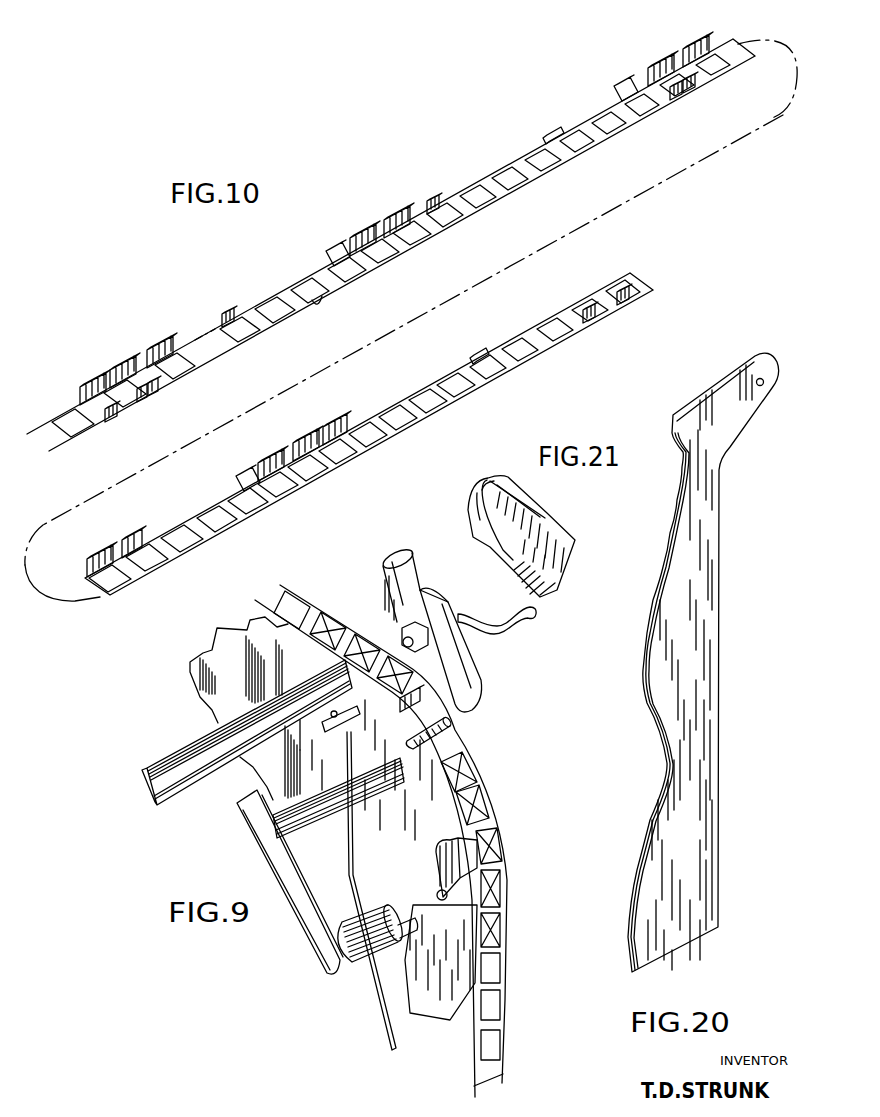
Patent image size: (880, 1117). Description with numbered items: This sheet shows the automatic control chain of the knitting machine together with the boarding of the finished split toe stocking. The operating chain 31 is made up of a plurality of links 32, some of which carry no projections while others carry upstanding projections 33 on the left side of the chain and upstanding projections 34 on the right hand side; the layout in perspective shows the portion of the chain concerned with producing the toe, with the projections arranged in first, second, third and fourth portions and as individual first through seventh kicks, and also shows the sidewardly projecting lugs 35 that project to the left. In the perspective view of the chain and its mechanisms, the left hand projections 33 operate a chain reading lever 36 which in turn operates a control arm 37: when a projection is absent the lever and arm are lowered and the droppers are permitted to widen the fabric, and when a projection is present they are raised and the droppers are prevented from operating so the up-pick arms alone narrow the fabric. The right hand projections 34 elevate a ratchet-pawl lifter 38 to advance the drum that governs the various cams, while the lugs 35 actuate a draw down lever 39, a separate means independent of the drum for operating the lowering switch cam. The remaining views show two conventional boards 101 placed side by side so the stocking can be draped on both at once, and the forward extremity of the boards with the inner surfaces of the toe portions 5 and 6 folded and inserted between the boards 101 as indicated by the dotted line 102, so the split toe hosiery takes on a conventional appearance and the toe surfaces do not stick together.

In FIG. 10, the operating chain 31 is at (283, 280).
In FIG. 9, the operating chain 31 is at (348, 605).
In FIG. 10, the links 32 is at (322, 296).
In FIG. 10, the upstanding projections (left side) 33 is at (668, 37).
In FIG. 9, the upstanding projections (left side) 33 is at (416, 702).
In FIG. 10, the upstanding projections (right side) 34 is at (116, 416).
In FIG. 10, the sidewardly projecting lugs 35 is at (552, 130).
In FIG. 9, the chain reading lever 36 is at (455, 728).
In FIG. 9, the control arm 37 is at (354, 866).
In FIG. 9, the ratchet-pawl lifter 38 is at (466, 668).
In FIG. 9, the draw down lever 39 is at (452, 848).
In FIG. 21, the toe portion 5 is at (468, 500).
In FIG. 21, the toe portion 6 is at (492, 484).
In FIG. 21, the boards 101 is at (555, 586).
In FIG. 20, the boards 101 is at (646, 692).
In FIG. 21, the dotted line 102 is at (514, 492).